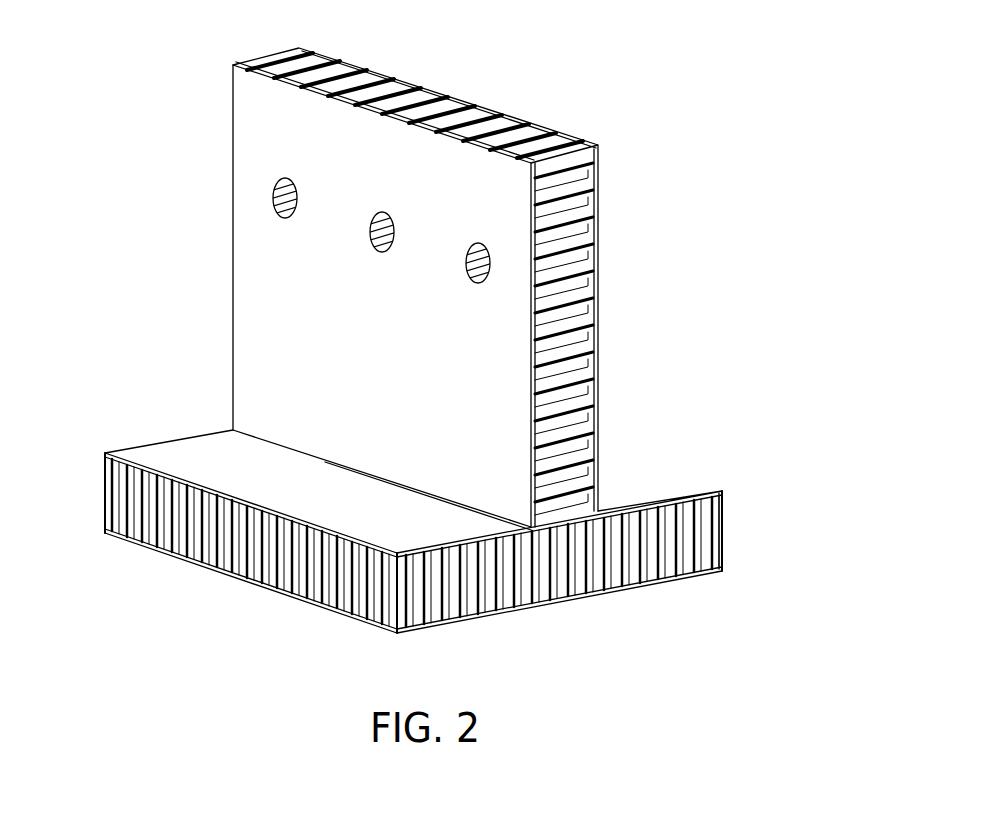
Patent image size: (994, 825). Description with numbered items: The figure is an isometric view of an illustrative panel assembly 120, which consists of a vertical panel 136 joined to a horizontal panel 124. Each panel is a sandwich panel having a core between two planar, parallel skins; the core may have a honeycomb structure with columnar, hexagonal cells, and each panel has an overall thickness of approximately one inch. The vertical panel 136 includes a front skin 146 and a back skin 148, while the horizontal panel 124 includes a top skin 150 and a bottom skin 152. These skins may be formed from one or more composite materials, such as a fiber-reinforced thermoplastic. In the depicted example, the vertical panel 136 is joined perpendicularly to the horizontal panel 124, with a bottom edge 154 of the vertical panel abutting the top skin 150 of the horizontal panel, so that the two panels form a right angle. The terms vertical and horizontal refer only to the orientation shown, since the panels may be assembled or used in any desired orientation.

The panel assembly 120 is at (150, 128).
The horizontal panel 124 is at (713, 525).
The vertical panel 136 is at (600, 200).
The front skin 146 is at (241, 240).
The back skin 148 is at (600, 300).
The top skin 150 is at (173, 442).
The bottom skin 152 is at (118, 545).
The bottom edge 154 is at (301, 439).